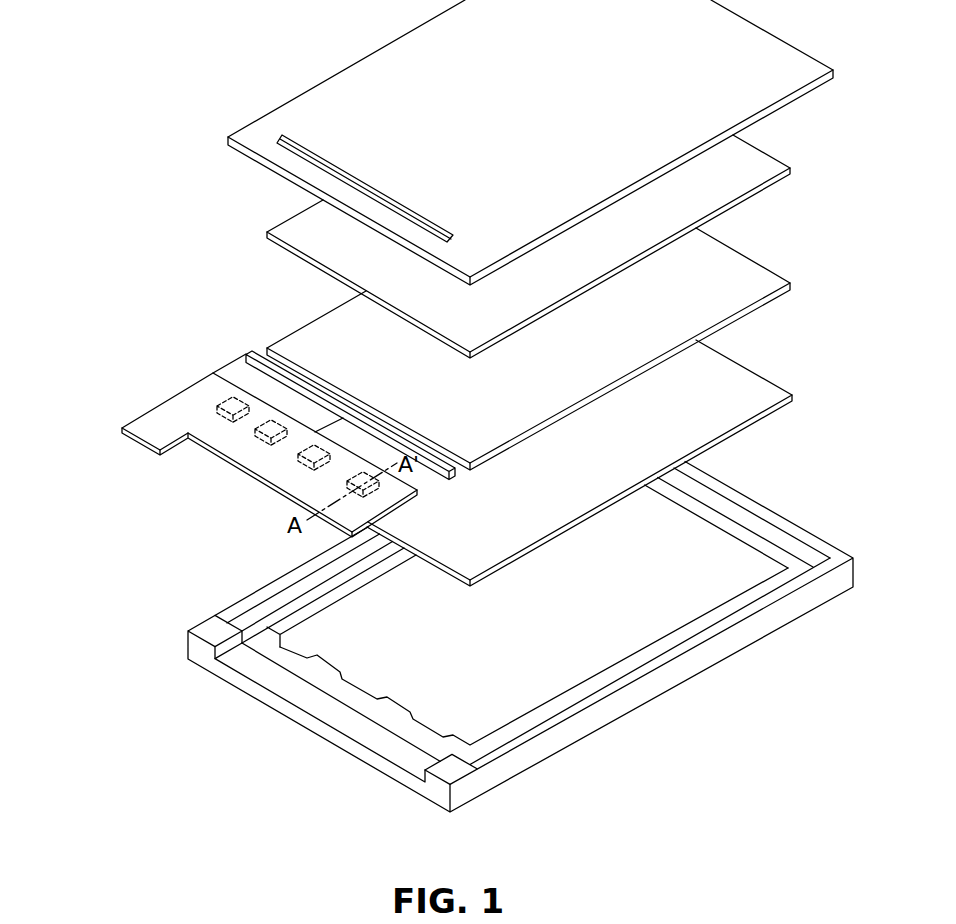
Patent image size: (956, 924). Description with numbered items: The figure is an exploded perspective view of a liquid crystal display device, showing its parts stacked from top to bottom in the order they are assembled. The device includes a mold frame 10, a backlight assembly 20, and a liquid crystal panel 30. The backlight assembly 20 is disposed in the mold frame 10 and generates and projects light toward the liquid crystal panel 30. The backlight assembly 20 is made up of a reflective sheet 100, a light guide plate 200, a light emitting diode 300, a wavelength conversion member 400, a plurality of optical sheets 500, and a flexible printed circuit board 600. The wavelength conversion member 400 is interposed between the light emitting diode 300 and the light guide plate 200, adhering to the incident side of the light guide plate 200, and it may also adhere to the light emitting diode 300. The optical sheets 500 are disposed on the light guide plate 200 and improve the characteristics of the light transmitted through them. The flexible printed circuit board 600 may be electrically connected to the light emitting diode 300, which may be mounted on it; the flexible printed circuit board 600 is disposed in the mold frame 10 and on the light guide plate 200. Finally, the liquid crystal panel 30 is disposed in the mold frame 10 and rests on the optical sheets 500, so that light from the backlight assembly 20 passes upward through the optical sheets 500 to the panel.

The mold frame 10 is at (208, 613).
The backlight assembly 20 is at (48, 295).
The liquid crystal panel 30 is at (323, 97).
The reflective sheet 100 is at (453, 549).
The light guide plate 200 is at (153, 413).
The light emitting diode 300 is at (230, 422).
The wavelength conversion member 400 is at (250, 358).
The optical sheets 500 is at (345, 256).
The flexible printed circuit board 600 is at (204, 391).